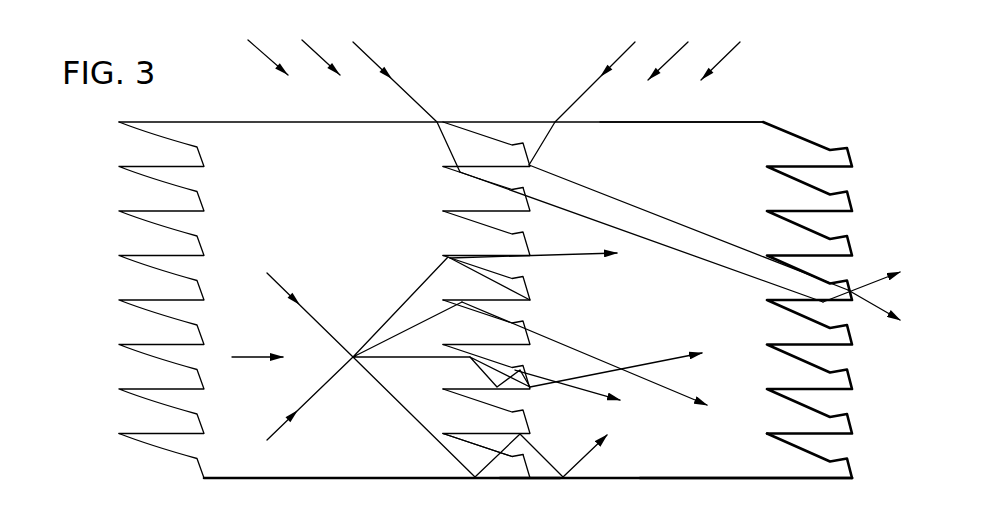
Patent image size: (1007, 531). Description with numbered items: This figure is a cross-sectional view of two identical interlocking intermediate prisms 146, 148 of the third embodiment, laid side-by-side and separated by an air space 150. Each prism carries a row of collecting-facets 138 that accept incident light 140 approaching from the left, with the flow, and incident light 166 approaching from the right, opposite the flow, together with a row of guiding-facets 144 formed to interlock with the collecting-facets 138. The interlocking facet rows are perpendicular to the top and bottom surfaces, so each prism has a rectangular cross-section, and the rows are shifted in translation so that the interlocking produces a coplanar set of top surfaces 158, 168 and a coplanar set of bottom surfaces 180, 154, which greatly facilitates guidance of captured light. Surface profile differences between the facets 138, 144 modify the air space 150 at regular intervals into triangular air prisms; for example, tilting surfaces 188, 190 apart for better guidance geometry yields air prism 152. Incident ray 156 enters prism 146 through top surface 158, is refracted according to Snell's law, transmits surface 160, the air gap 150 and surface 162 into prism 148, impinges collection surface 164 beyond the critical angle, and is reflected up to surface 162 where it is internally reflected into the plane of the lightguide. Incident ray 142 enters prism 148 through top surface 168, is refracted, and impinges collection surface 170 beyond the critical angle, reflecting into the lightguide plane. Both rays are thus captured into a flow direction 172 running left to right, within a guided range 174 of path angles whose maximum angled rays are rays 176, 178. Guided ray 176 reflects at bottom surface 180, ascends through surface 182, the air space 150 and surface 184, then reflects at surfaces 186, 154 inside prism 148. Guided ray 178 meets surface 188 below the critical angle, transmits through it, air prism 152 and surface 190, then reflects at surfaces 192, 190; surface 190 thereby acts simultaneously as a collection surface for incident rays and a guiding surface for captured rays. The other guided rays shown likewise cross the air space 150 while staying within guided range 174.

The collecting-facets 138 is at (163, 445).
The incident light 140 is at (323, 93).
The incident ray 142 is at (618, 50).
The guiding-facets 144 is at (508, 472).
The intermediate prism 146 is at (296, 178).
The intermediate prism 148 is at (716, 178).
The air space 150 is at (530, 481).
The air prism 152 is at (530, 291).
The bottom surface 154 is at (705, 482).
The incident ray 156 is at (378, 50).
The top surface 158 is at (254, 122).
The surface 160 is at (447, 170).
The surface 162 is at (517, 170).
The collection surface 164 is at (505, 186).
The incident light 166 is at (687, 95).
The top surface 168 is at (734, 122).
The collection surface 170 is at (534, 160).
The flow direction 172 is at (228, 368).
The guided range 174 is at (330, 368).
The guided ray 176 is at (258, 273).
The guided ray 178 is at (262, 462).
The bottom surface 180 is at (364, 480).
The surface 182 is at (485, 457).
The surface 184 is at (503, 427).
The surface 186 is at (462, 437).
The surface 188 is at (488, 278).
The surface 190 is at (515, 276).
The surface 192 is at (492, 258).